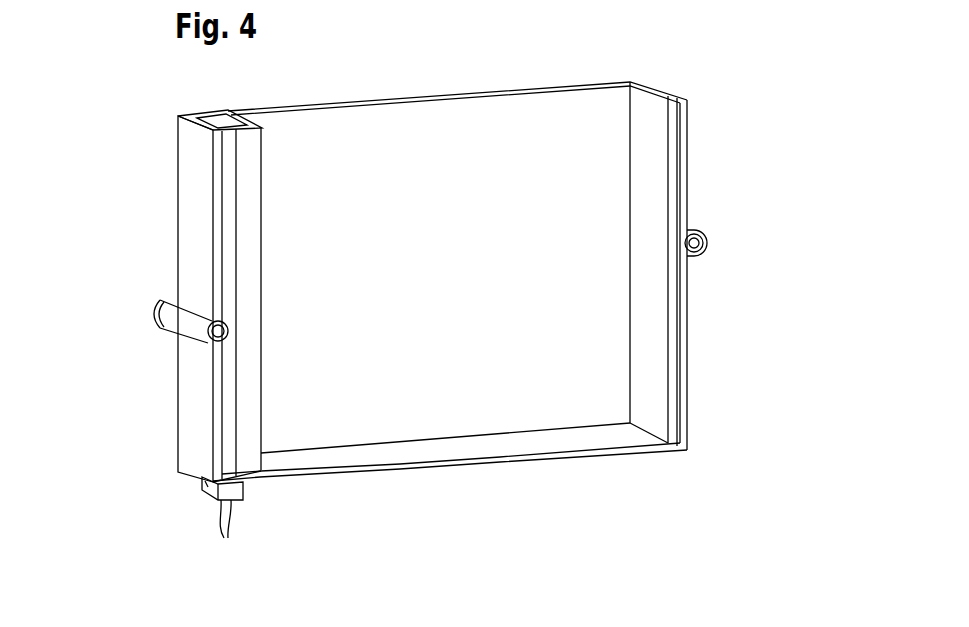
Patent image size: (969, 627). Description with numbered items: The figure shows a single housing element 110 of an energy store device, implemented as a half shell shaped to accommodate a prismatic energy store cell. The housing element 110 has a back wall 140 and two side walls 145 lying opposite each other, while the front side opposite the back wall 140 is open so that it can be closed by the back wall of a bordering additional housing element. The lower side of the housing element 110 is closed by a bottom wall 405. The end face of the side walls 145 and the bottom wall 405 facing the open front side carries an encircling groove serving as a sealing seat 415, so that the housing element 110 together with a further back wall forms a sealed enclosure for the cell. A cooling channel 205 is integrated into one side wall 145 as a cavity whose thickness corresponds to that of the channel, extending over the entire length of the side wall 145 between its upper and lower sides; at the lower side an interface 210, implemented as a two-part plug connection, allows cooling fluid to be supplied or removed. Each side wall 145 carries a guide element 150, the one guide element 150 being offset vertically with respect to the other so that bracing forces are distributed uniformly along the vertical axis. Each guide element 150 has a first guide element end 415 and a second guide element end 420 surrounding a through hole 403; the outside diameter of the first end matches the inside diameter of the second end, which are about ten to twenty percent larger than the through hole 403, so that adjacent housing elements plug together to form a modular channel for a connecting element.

The housing element 110 is at (537, 59).
The back wall 140 is at (467, 293).
The side wall 145 is at (195, 405).
The guide element 150 is at (175, 305).
The cooling channel 205 is at (207, 118).
The interface 210 is at (224, 524).
The through hole 403 is at (212, 330).
The bottom wall 405 is at (627, 445).
The first guide element end 415 is at (152, 312).
The second guide element end 420 is at (228, 330).